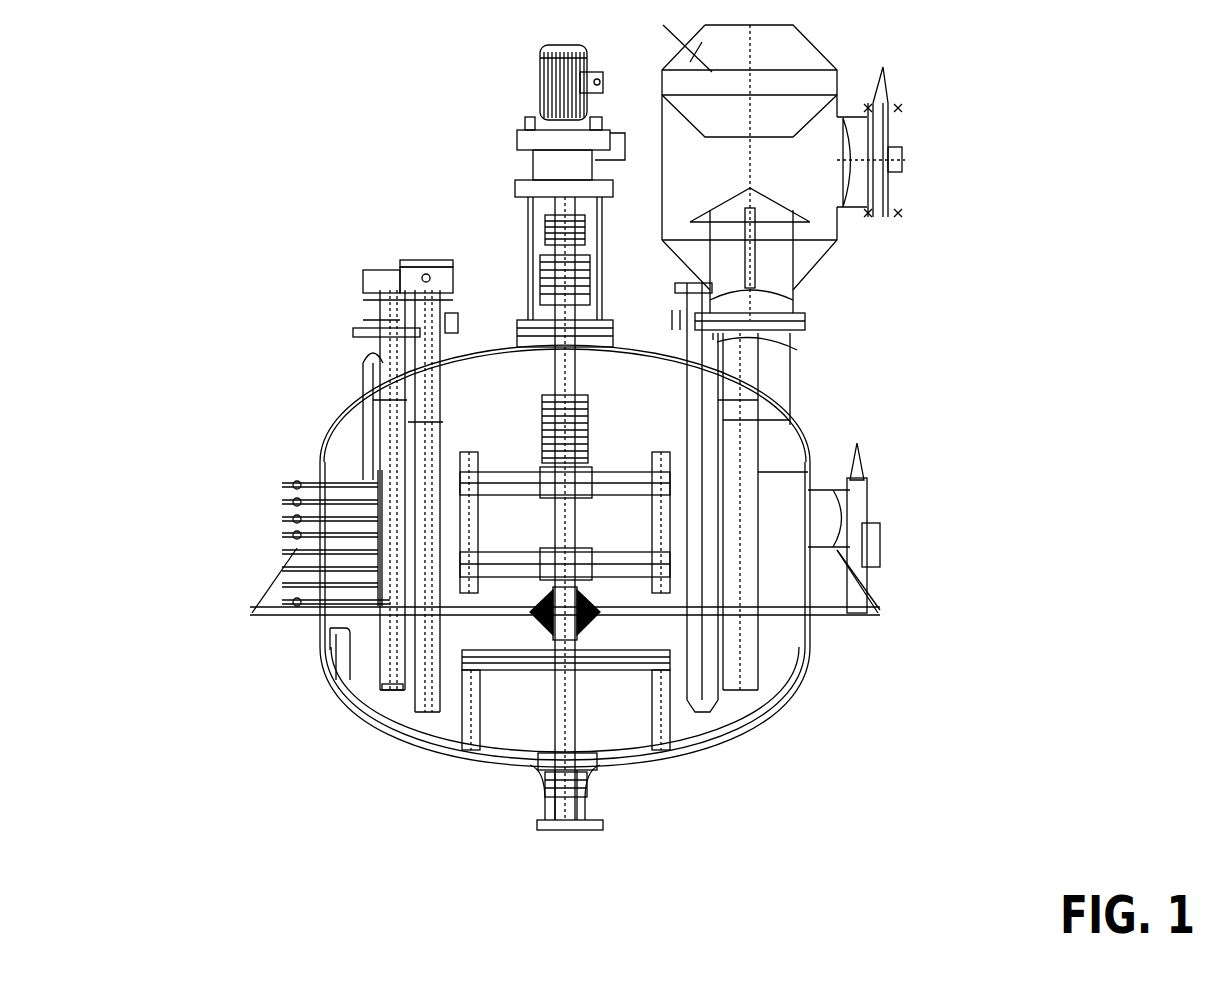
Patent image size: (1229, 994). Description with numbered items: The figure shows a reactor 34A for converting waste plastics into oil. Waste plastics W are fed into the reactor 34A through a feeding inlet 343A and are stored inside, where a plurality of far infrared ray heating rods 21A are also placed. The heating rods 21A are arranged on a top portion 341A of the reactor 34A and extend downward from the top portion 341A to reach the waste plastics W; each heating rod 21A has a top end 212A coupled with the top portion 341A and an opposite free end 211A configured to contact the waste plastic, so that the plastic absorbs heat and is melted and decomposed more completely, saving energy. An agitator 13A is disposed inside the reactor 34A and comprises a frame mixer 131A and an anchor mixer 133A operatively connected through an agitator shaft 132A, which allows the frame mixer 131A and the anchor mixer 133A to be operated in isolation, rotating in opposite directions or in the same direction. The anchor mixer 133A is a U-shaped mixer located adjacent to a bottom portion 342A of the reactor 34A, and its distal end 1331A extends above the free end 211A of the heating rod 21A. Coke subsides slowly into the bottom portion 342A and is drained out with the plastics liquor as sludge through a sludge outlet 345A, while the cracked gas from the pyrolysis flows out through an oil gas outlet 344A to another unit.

The reactor 34A is at (190, 113).
The agitator 13A is at (970, 451).
The top portion 341A is at (490, 347).
The bottom portion 342A is at (358, 717).
The feeding inlet 343A is at (372, 340).
The oil gas outlet 344A is at (777, 350).
The sludge outlet 345A is at (545, 813).
The frame mixer 131A is at (658, 530).
The agitator shaft 132A is at (565, 690).
The anchor mixer 133A is at (700, 737).
The distal end 1331A is at (337, 625).
The far infrared ray heating rod 21A is at (420, 437).
The free end 211A is at (392, 690).
The top end 212A is at (368, 362).
The waste plastics W is at (365, 670).